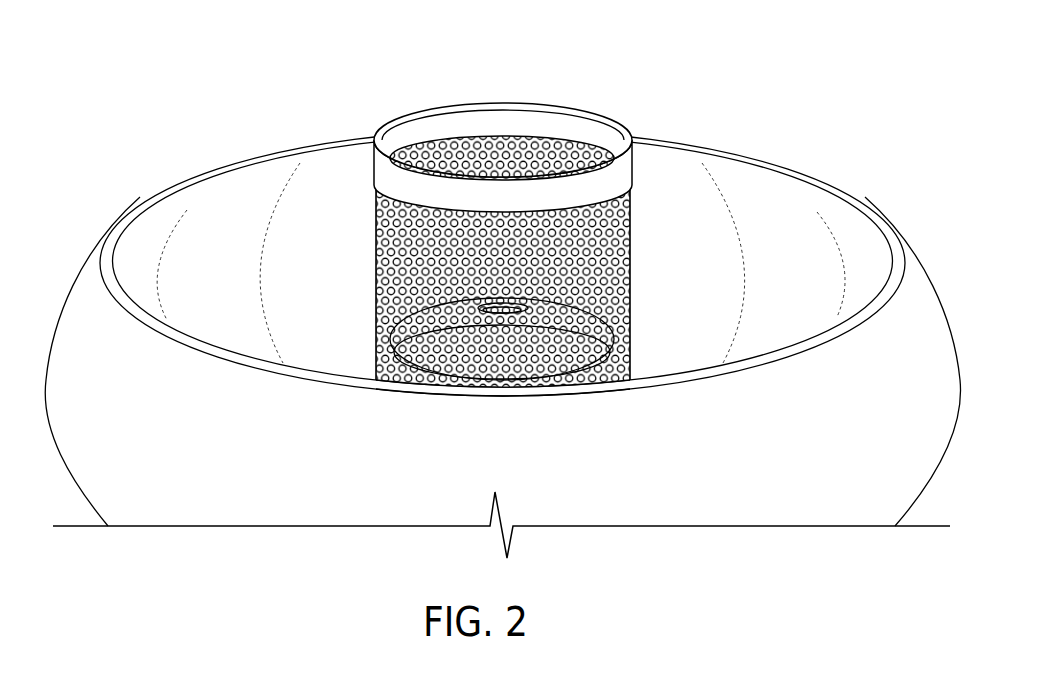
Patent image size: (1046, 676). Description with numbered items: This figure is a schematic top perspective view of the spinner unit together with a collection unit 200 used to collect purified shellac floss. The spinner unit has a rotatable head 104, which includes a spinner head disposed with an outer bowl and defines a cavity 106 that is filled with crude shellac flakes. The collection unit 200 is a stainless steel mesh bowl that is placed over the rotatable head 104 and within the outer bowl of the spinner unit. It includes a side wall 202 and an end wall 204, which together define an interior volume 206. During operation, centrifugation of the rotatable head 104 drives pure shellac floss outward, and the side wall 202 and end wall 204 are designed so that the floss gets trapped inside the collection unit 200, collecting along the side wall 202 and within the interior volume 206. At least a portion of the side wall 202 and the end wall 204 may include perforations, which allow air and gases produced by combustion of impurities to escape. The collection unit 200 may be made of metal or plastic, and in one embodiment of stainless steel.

The rotatable head 104 is at (802, 175).
The cavity 106 is at (208, 211).
The collection unit 200 is at (536, 210).
The side wall 202 is at (372, 210).
The end wall 204 is at (487, 145).
The interior volume 206 is at (575, 310).